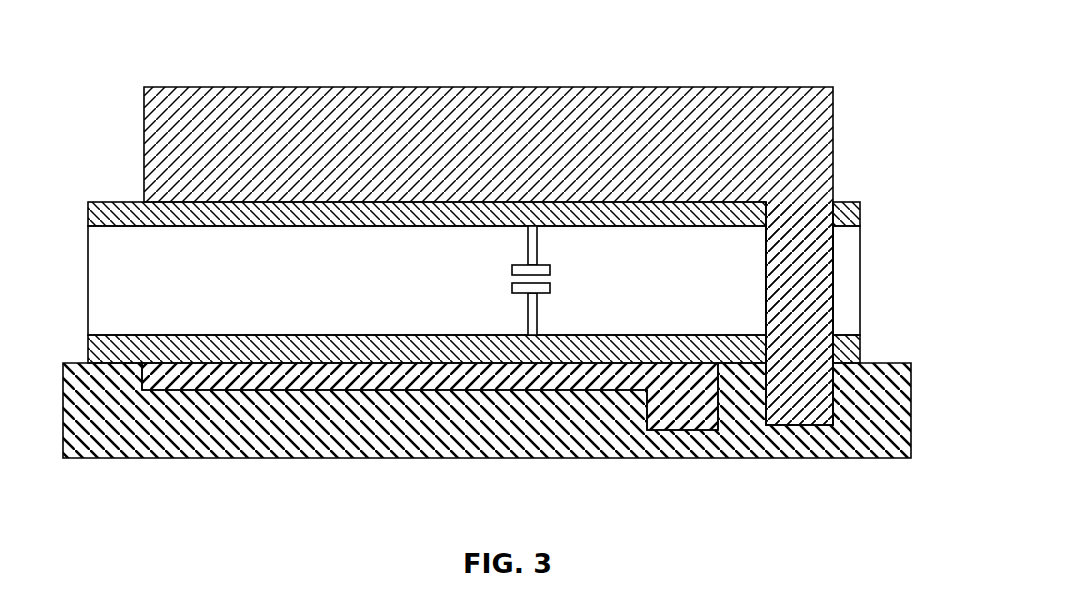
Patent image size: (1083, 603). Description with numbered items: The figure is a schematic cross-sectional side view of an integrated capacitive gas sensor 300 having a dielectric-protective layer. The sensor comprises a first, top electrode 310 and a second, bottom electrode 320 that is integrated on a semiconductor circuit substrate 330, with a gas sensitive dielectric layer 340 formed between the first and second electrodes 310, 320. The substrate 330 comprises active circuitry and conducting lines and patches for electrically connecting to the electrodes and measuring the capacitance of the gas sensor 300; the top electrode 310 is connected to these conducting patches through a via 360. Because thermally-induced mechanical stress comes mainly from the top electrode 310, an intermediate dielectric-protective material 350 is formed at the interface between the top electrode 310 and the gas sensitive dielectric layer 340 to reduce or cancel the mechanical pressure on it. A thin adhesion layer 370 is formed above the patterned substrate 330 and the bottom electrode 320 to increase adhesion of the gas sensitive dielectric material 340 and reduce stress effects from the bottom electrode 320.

The integrated capacitive gas sensor 300 is at (845, 42).
The first electrode 310 is at (820, 141).
The second electrode 320 is at (175, 370).
The semiconductor circuit substrate 330 is at (208, 432).
The gas sensitive dielectric layer 340 is at (108, 280).
The dielectric-protective material 350 is at (102, 217).
The via 360 is at (820, 323).
The adhesion layer 370 is at (100, 351).